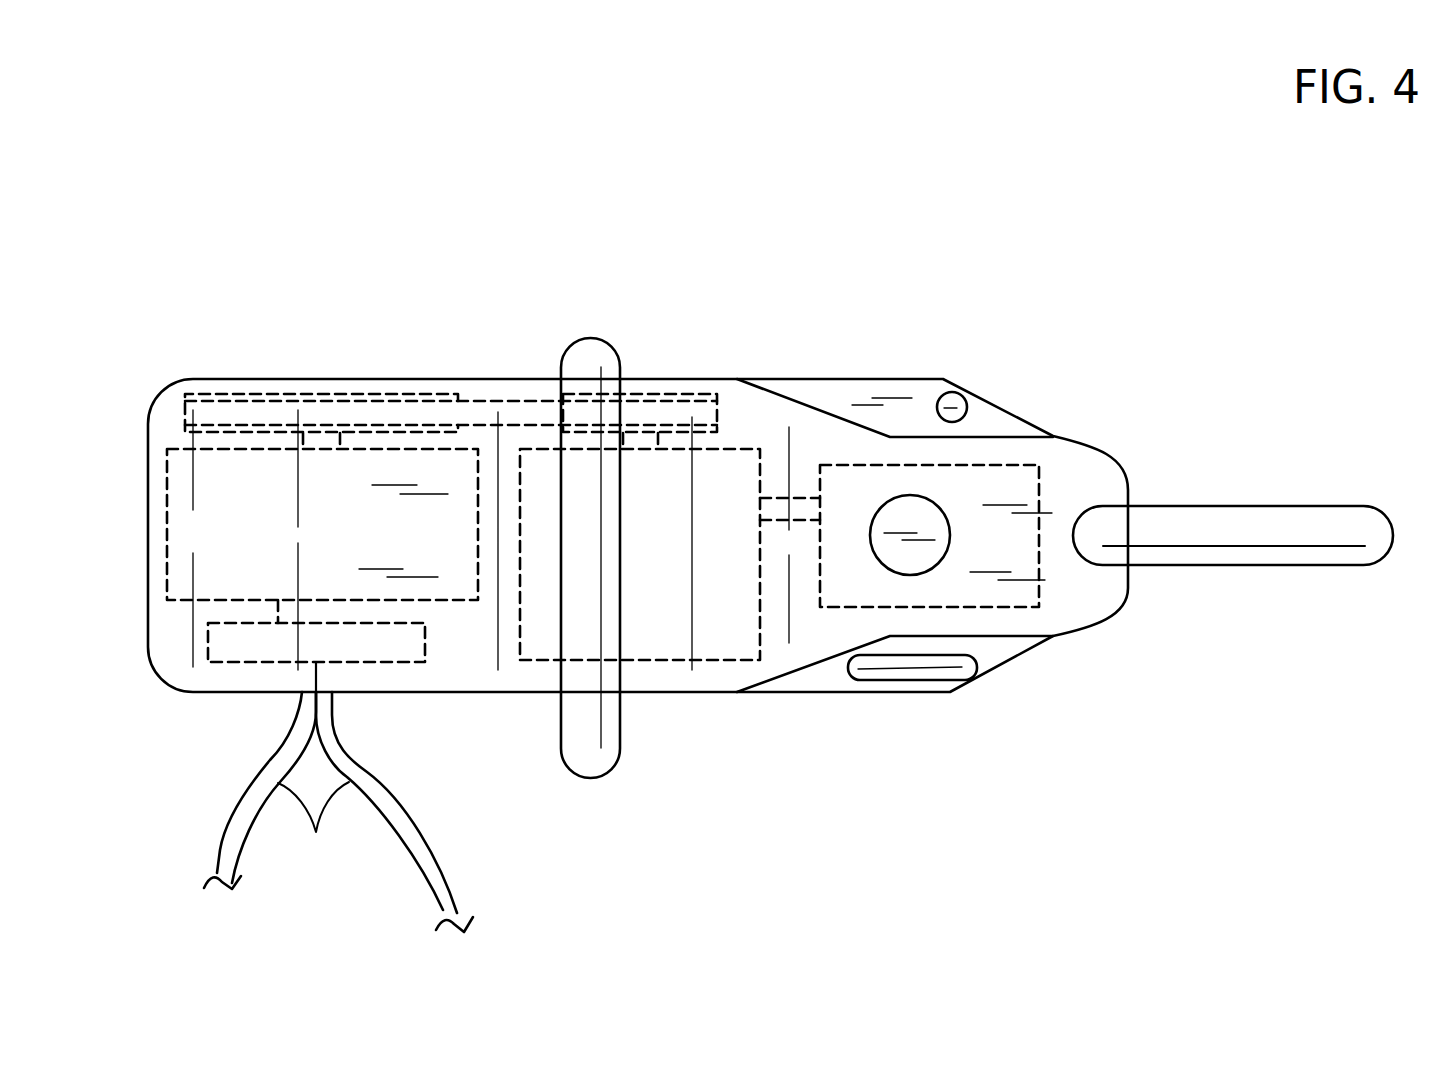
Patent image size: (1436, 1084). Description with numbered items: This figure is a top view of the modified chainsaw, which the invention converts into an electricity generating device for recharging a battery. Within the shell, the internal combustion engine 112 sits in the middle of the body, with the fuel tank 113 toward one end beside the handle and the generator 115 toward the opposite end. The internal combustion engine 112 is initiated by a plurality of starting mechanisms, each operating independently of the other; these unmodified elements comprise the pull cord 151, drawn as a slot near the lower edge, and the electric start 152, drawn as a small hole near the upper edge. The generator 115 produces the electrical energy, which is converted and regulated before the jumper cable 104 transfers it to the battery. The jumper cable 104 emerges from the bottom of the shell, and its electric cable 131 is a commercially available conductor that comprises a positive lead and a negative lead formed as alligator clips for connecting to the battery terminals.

The jumper cable 104 is at (385, 793).
The internal combustion engine 112 is at (677, 488).
The fuel tank 113 is at (1013, 487).
The generator 115 is at (430, 510).
The electric cable 131 is at (313, 826).
The pull cord 151 is at (957, 670).
The electric start 152 is at (962, 402).